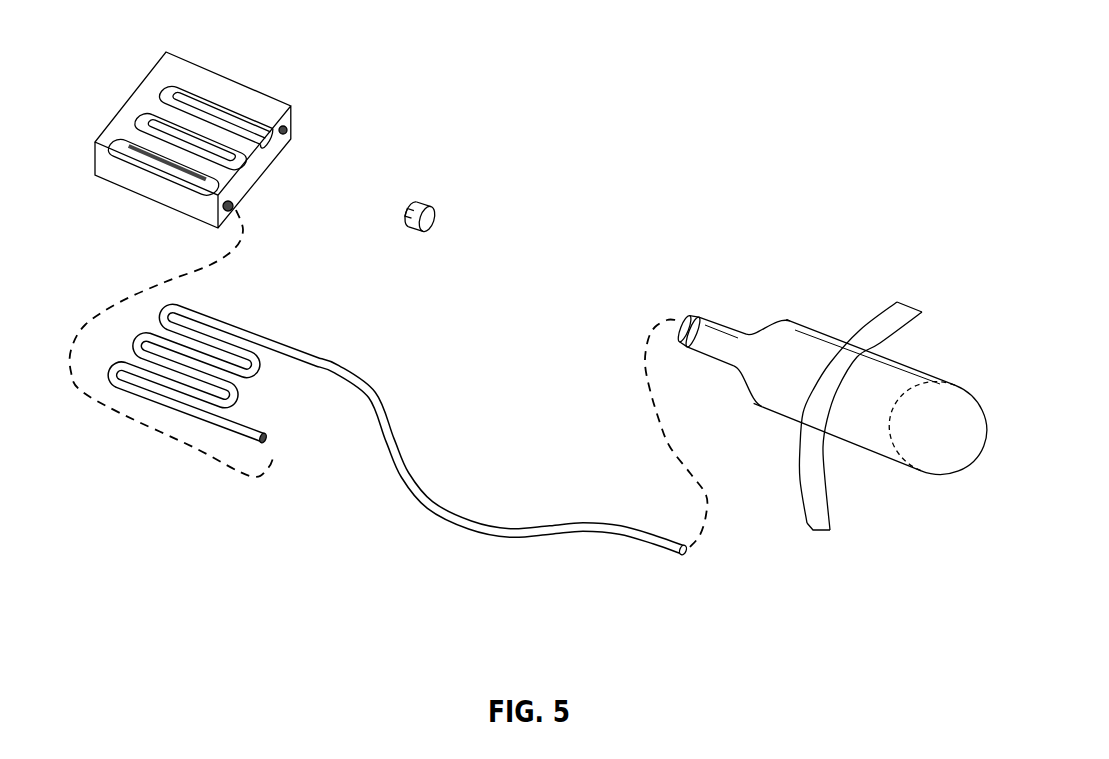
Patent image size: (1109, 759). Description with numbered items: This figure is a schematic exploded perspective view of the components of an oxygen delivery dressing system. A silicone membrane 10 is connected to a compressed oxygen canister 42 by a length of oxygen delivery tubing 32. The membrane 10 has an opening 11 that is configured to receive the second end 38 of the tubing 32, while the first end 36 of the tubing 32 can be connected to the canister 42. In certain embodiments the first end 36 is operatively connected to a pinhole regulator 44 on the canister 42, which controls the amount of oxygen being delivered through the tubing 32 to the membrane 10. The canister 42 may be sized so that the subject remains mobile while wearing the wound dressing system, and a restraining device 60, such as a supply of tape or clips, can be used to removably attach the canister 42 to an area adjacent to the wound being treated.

The membrane 10 is at (267, 78).
The opening 11 is at (236, 203).
The tubing 32 is at (419, 473).
The first end 36 is at (686, 560).
The second end 38 is at (268, 439).
The canister 42 is at (787, 318).
The regulator 44 is at (423, 202).
The restraining device 60 is at (817, 533).